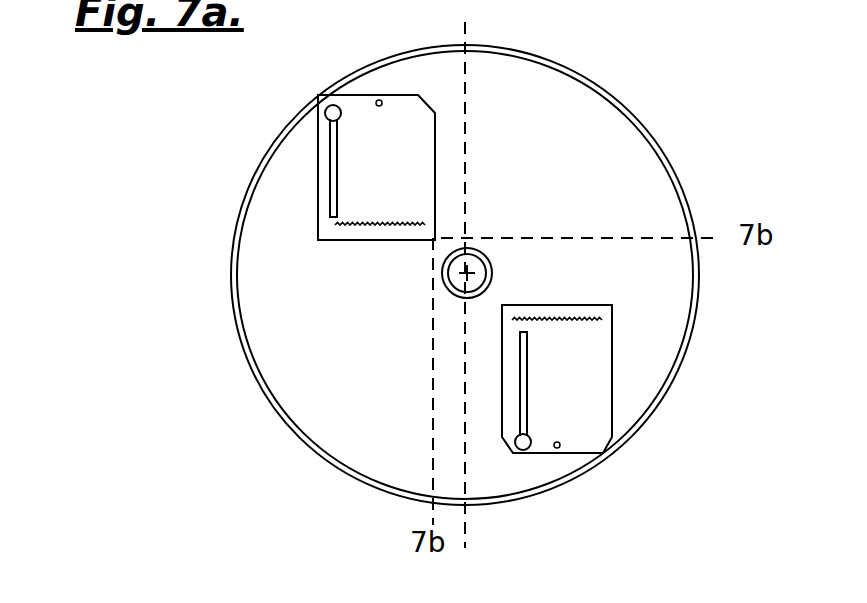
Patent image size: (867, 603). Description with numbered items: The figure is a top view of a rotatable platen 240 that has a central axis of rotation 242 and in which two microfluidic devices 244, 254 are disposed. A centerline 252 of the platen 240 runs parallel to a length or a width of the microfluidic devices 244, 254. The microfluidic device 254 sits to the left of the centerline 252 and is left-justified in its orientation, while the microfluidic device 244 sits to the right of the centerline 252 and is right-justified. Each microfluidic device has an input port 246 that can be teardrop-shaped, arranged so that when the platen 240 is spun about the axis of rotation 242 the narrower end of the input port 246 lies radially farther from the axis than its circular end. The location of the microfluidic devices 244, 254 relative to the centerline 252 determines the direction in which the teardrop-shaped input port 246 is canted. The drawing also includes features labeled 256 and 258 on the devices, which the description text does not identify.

The rotatable platen 240 is at (676, 347).
The central axis of rotation 242 is at (445, 273).
The microfluidic device 244 is at (600, 399).
The input port 246 is at (336, 226).
The centerline 252 is at (466, 406).
The microfluidic device 254 is at (402, 110).
The adjustment slot 256 is at (333, 187).
The adjustment slot 258 is at (527, 425).